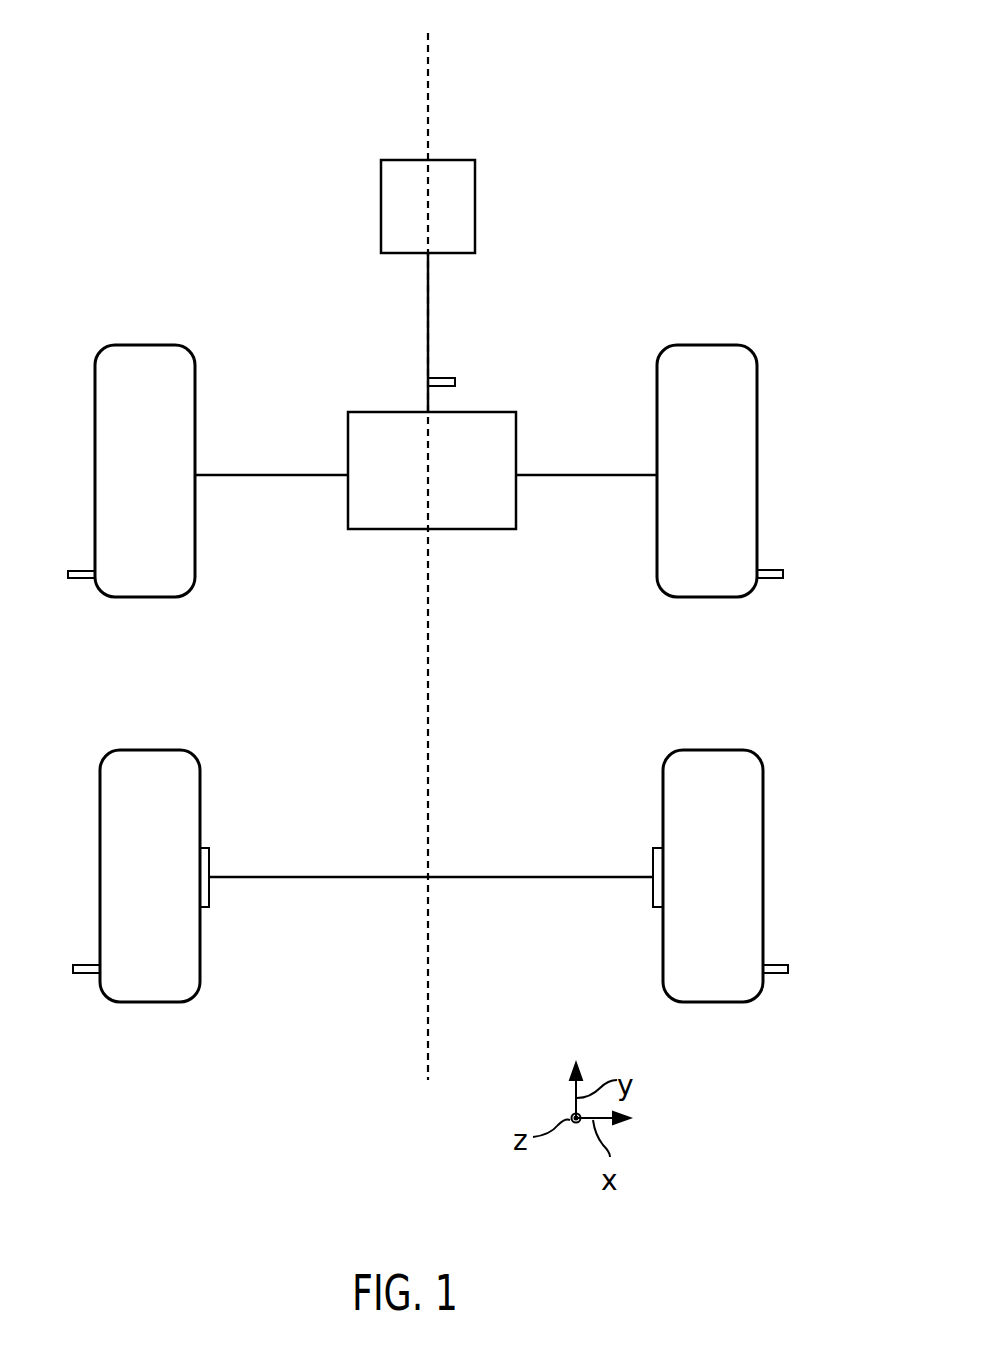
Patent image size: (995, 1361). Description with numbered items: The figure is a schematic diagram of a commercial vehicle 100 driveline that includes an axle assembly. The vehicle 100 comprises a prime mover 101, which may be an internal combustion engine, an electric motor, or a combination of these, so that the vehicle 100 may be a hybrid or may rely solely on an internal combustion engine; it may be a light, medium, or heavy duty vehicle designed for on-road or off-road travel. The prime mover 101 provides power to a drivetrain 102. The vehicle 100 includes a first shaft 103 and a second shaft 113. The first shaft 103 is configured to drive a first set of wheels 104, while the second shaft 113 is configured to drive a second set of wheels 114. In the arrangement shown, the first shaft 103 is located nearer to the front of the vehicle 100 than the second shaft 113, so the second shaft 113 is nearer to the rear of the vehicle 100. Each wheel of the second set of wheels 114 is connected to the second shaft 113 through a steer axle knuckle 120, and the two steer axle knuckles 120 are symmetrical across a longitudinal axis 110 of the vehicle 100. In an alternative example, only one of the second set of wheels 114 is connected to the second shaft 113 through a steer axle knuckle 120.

The vehicle 100 is at (663, 96).
The prime mover 101 is at (475, 207).
The drivetrain 102 is at (348, 500).
The first shaft 103 is at (570, 477).
The first set of wheels 104 is at (195, 402).
The longitudinal axis 110 is at (428, 98).
The second shaft 113 is at (515, 879).
The second set of wheels 114 is at (200, 930).
The steer axle knuckle 120 is at (210, 858).